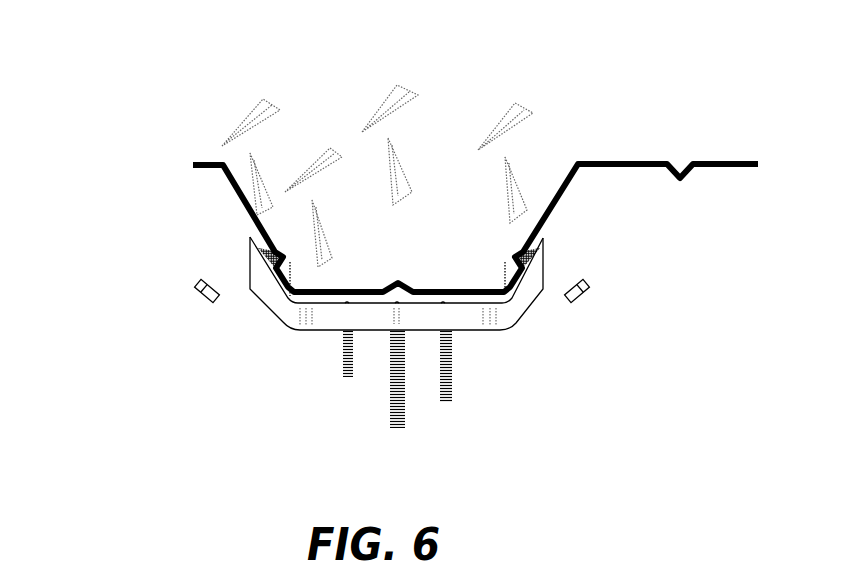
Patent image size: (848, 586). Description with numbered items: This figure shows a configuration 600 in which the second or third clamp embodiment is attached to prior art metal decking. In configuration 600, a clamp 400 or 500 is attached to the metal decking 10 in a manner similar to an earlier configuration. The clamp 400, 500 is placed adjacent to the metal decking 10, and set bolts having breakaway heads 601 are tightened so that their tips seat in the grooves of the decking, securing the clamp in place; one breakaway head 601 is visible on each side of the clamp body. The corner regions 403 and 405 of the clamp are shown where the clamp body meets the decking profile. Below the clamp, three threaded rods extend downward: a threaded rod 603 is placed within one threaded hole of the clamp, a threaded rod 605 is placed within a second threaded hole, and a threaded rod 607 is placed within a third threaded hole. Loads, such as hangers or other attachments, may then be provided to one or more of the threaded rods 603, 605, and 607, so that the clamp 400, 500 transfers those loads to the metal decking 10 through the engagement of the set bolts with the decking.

The configuration 600 is at (137, 124).
The metal decking 10 is at (322, 95).
The clamp 400 is at (243, 327).
The clamp 500 is at (396, 283).
The left corner adhesive pad 403 is at (252, 259).
The right corner adhesive pad 405 is at (543, 261).
The breakaway heads 601 is at (196, 298).
The threaded rod 603 is at (347, 379).
The threaded rod 605 is at (398, 430).
The threaded rod 607 is at (447, 403).